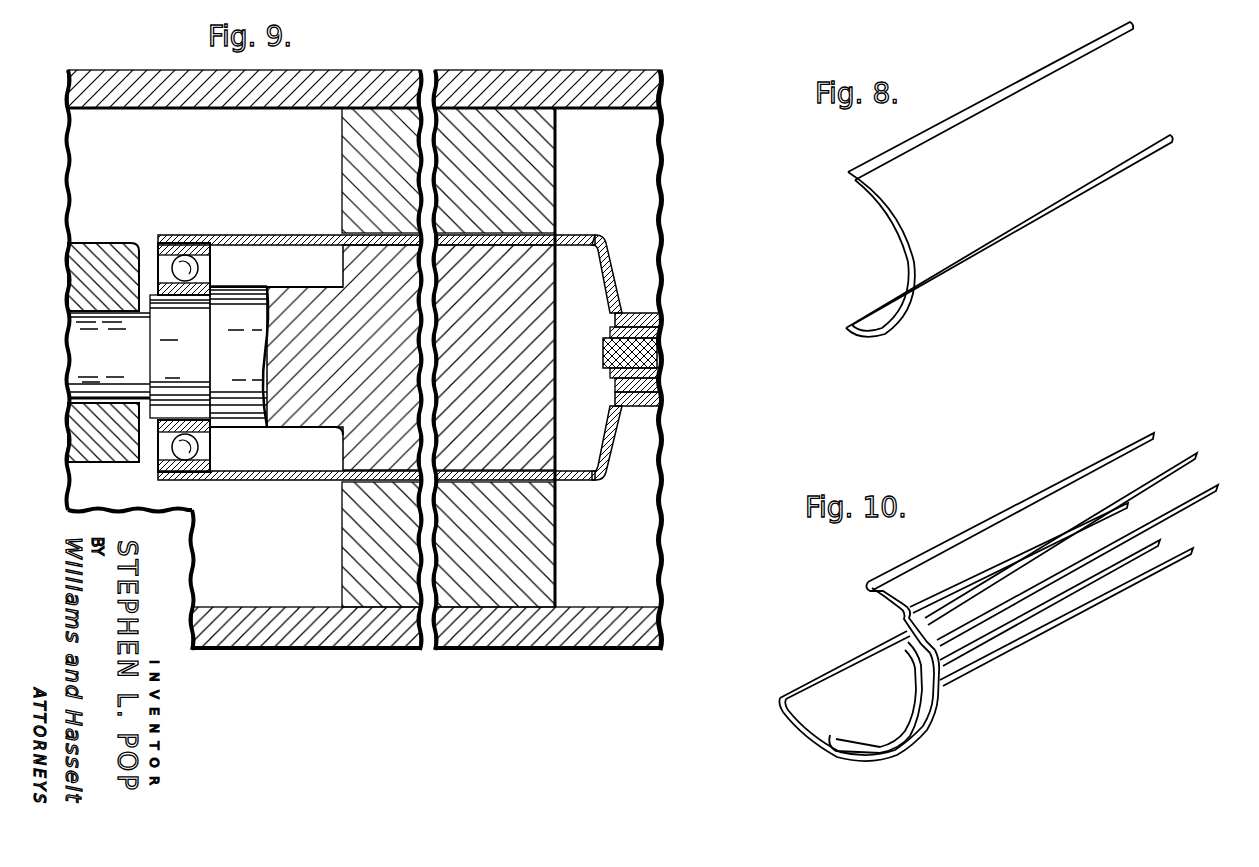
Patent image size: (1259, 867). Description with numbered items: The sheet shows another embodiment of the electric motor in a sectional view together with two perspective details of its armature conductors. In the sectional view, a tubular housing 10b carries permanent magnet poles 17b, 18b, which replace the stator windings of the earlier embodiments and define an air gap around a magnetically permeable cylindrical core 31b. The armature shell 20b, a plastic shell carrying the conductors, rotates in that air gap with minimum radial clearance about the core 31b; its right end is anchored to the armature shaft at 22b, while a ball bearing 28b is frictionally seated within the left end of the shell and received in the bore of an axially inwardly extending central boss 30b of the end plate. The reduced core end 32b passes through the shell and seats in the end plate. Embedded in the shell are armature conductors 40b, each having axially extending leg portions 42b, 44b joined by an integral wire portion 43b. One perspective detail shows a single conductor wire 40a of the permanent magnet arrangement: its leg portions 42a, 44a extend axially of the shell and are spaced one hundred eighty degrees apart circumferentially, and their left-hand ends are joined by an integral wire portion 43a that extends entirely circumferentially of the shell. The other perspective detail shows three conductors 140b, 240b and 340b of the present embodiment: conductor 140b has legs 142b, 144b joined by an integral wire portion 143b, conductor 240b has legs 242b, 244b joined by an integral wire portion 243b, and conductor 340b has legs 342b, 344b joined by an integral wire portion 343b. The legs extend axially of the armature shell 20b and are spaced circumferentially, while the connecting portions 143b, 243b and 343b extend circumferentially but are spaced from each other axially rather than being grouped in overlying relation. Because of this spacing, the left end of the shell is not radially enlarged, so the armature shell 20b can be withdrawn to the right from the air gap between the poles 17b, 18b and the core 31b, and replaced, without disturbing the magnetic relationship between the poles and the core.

In FIG. 9, the tubular housing 10b is at (590, 92).
In FIG. 9, the permanent magnet pole 17b is at (490, 125).
In FIG. 9, the permanent magnet pole 18b is at (505, 592).
In FIG. 9, the armature shell 20b is at (600, 232).
In FIG. 9, the anchoring connection 22b is at (603, 352).
In FIG. 9, the ball bearing 28b is at (145, 262).
In FIG. 9, the central boss 30b is at (86, 262).
In FIG. 9, the core 31b is at (515, 330).
In FIG. 9, the reduced core end 32b is at (167, 352).
In FIG. 9, the armature conductor 40b is at (588, 424).
In FIG. 9, the conductor leg portion 42b is at (532, 472).
In FIG. 9, the integral wire portion 43b is at (318, 246).
In FIG. 9, the conductor leg portion 44b is at (528, 256).
In FIG. 8, the armature conductor wire 40a is at (1009, 184).
In FIG. 8, the leg portion 42a is at (1082, 190).
In FIG. 8, the integral wire portion 43a is at (897, 327).
In FIG. 8, the leg portion 44a is at (1006, 88).
In FIG. 10, the armature conductor 140b is at (1008, 536).
In FIG. 10, the leg 142b is at (1160, 567).
In FIG. 10, the integral wire portion 143b is at (873, 593).
In FIG. 10, the leg 144b is at (1140, 433).
In FIG. 10, the armature conductor 240b is at (994, 615).
In FIG. 10, the leg 242b is at (1098, 580).
In FIG. 10, the integral wire portion 243b is at (883, 657).
In FIG. 10, the leg 244b is at (1012, 550).
In FIG. 10, the armature conductor 340b is at (993, 614).
In FIG. 10, the leg 342b is at (820, 666).
In FIG. 10, the integral wire portion 343b is at (823, 753).
In FIG. 10, the leg 344b is at (1180, 505).